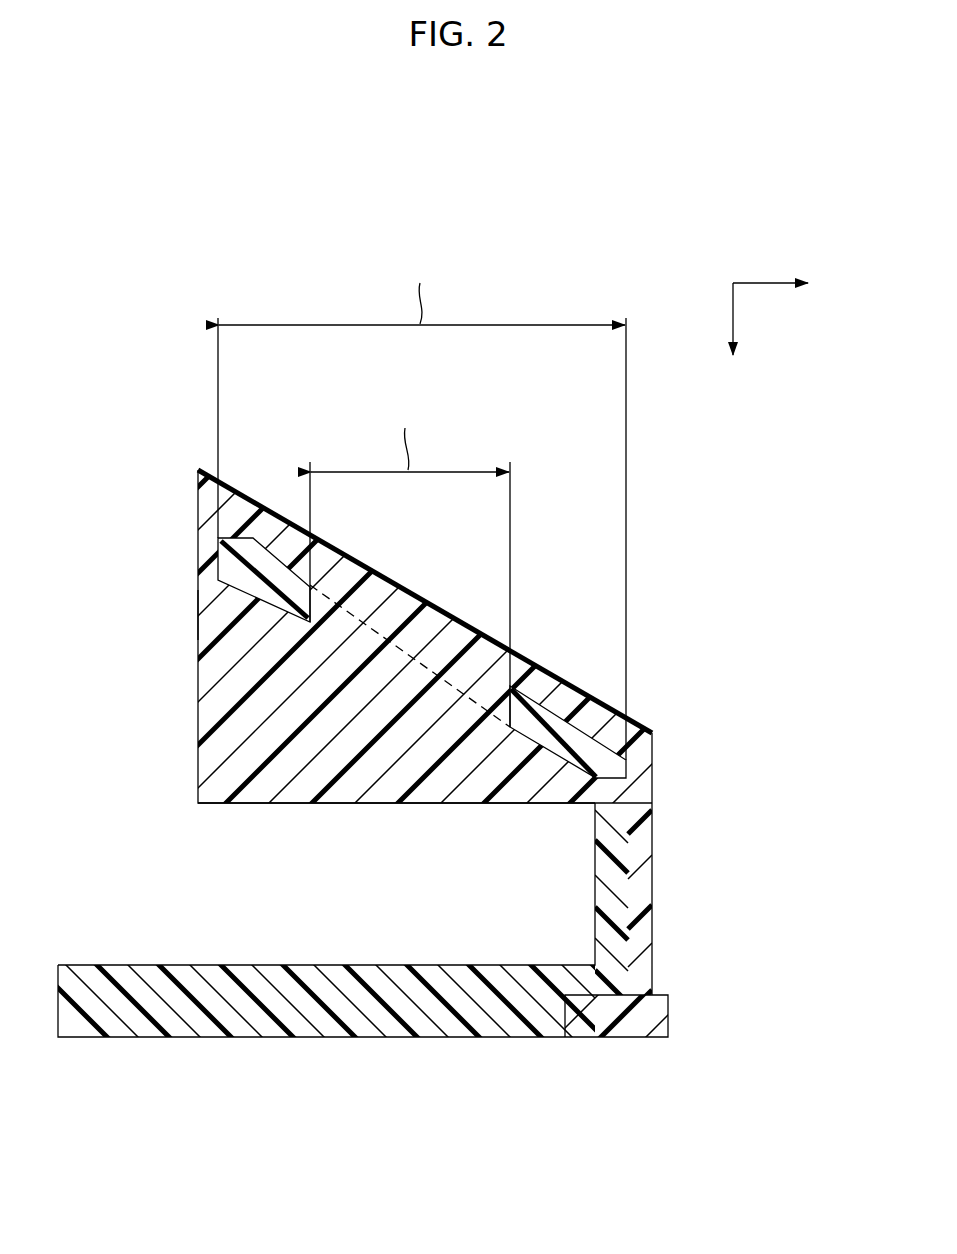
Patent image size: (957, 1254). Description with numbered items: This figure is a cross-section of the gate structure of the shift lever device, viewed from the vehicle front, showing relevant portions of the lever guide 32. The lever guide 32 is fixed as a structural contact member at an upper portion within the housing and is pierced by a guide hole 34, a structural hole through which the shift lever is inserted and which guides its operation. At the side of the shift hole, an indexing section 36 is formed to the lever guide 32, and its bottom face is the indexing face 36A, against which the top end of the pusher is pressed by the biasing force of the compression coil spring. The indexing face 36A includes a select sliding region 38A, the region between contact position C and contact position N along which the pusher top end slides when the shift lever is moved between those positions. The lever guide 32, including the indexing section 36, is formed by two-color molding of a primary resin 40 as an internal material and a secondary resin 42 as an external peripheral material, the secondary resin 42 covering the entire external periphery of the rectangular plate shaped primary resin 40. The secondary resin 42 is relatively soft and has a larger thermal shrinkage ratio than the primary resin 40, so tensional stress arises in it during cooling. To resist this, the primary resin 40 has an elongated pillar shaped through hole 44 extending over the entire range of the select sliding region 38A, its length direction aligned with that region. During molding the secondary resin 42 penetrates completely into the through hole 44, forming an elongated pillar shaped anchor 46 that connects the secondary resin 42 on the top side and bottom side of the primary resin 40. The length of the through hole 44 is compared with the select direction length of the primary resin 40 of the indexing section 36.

The lever guide 32 is at (527, 244).
The guide hole 34 is at (668, 1009).
The indexing section 36 is at (196, 507).
The indexing face 36A is at (557, 679).
The select sliding region 38A is at (446, 621).
The primary resin 40 is at (216, 546).
The secondary resin 42 is at (199, 604).
The through hole 44 is at (504, 722).
The anchor 46 is at (425, 665).